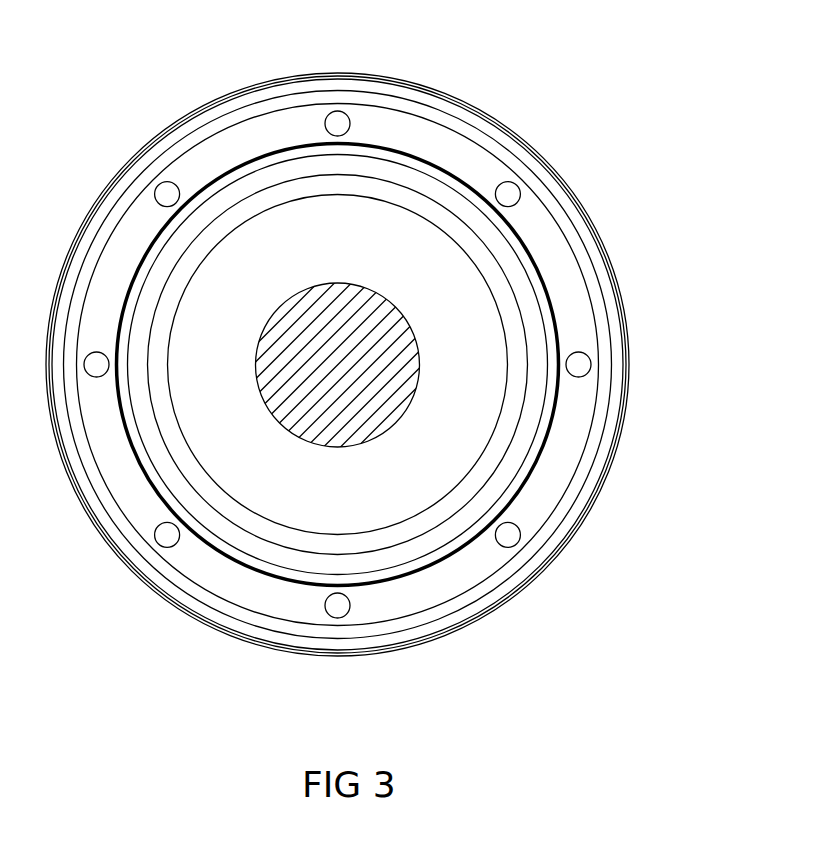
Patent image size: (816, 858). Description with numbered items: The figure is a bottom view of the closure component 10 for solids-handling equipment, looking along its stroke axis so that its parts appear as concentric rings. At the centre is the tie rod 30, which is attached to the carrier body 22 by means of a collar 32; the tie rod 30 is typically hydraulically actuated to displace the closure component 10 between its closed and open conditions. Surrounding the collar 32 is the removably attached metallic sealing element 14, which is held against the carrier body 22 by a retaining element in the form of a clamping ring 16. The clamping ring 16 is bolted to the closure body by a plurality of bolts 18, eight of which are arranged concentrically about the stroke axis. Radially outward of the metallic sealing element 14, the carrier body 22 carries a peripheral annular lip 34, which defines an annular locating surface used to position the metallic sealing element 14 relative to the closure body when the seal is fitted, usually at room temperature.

The closure component 10 is at (548, 76).
The metallic sealing element 14 is at (597, 227).
The clamping ring 16 is at (596, 300).
The bolts 18 is at (581, 363).
The carrier body 22 is at (523, 438).
The tie rod 30 is at (353, 415).
The collar 32 is at (467, 460).
The peripheral annular lip 34 is at (555, 175).